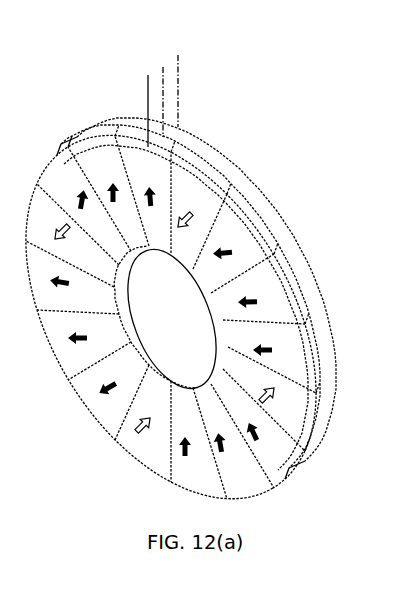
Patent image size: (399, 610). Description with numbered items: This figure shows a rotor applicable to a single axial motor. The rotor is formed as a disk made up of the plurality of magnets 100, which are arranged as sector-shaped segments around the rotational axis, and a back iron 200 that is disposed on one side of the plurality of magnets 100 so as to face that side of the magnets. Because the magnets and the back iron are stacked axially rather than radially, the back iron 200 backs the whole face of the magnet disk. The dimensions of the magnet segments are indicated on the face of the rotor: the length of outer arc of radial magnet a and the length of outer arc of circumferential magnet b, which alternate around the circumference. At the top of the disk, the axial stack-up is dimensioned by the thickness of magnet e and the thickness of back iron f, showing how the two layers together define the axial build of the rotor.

The plurality of magnets 100 is at (312, 273).
The back iron 200 is at (257, 193).
The length of outer arc of radial magnet a is at (99, 193).
The length of outer arc of circumferential magnet b is at (213, 197).
The thickness of magnet e is at (159, 87).
The thickness of back iron f is at (174, 79).